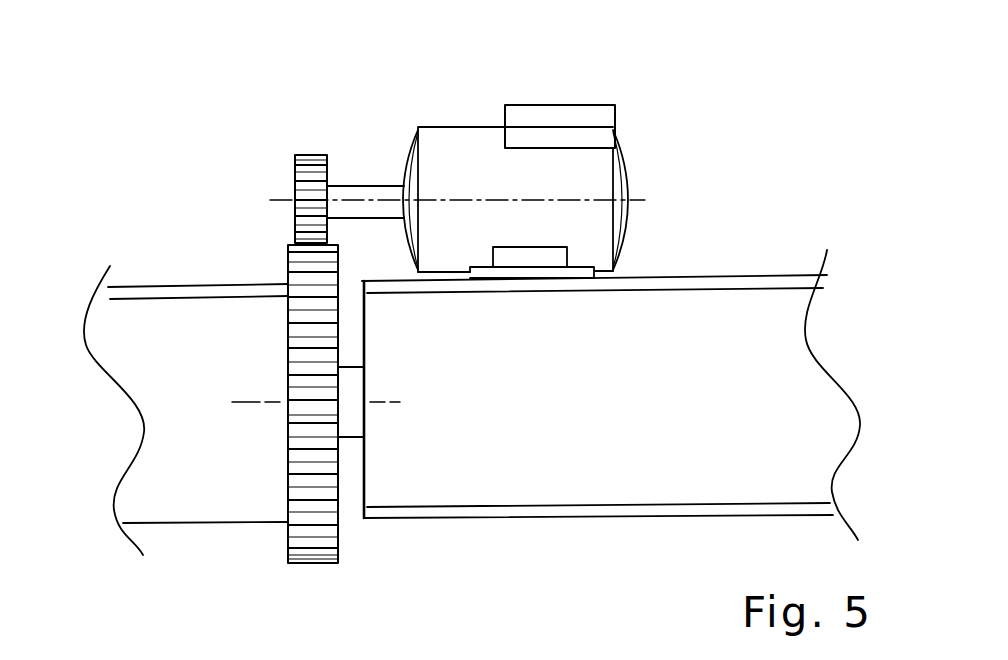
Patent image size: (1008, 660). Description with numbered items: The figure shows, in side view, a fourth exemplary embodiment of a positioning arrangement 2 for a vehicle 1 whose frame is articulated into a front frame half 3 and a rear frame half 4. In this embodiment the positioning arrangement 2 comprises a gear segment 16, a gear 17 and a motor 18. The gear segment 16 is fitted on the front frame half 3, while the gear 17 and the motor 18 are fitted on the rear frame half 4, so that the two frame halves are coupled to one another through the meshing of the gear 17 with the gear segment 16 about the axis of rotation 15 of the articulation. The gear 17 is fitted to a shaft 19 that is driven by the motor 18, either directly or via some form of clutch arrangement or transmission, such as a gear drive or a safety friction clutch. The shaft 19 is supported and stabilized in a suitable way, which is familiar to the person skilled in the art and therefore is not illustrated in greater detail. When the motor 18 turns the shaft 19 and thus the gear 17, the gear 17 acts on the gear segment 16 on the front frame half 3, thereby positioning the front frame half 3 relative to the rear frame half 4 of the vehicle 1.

The vehicle 1 is at (66, 80).
The positioning arrangement 2 is at (334, 127).
The front frame half 3 is at (186, 431).
The rear frame half 4 is at (611, 421).
The axis of rotation 15 is at (375, 482).
The gear segment 16 is at (257, 380).
The gear 17 is at (252, 171).
The motor 18 is at (584, 84).
The shaft 19 is at (381, 137).